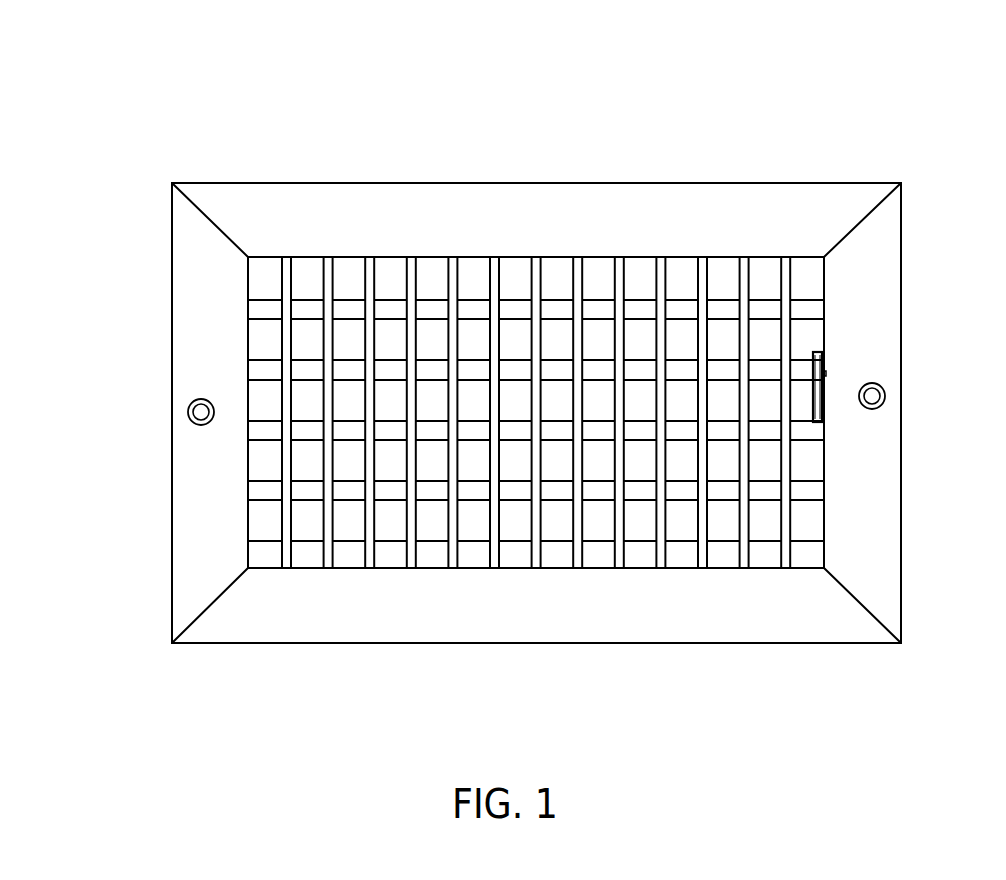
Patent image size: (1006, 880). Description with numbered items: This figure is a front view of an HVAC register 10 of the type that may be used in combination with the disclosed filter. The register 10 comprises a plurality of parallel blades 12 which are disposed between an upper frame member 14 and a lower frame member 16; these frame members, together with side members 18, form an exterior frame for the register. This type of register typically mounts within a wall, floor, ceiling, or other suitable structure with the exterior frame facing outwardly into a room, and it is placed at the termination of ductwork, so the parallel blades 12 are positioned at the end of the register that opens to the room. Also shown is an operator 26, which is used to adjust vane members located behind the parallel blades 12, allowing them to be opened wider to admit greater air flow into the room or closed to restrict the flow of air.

The register 10 is at (533, 128).
The parallel blades 12 is at (289, 568).
The upper frame member 14 is at (807, 166).
The lower frame member 16 is at (841, 650).
The side members 18 is at (177, 562).
The operator 26 is at (828, 362).